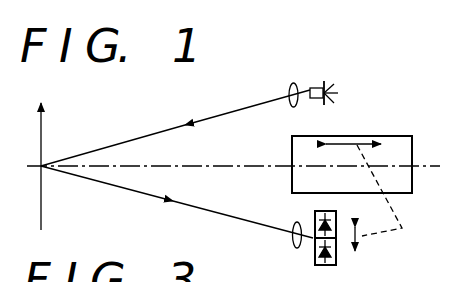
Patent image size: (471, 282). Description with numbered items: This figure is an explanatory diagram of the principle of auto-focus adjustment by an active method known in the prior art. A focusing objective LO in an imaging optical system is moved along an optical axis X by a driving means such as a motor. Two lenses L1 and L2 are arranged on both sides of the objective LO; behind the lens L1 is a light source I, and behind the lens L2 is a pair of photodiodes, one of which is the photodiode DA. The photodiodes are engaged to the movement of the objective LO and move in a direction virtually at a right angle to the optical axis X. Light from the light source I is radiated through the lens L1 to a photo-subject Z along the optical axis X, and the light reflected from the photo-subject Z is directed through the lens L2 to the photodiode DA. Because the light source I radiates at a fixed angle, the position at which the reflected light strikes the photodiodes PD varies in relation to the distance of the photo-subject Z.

The photo-subject Z is at (41, 133).
The optical axis X is at (203, 165).
The lens L1 is at (288, 88).
The light source I is at (313, 83).
The focusing objective LO is at (358, 137).
The photodiode DA is at (313, 218).
The lens L2 is at (293, 246).
The photodiodes PD is at (319, 265).